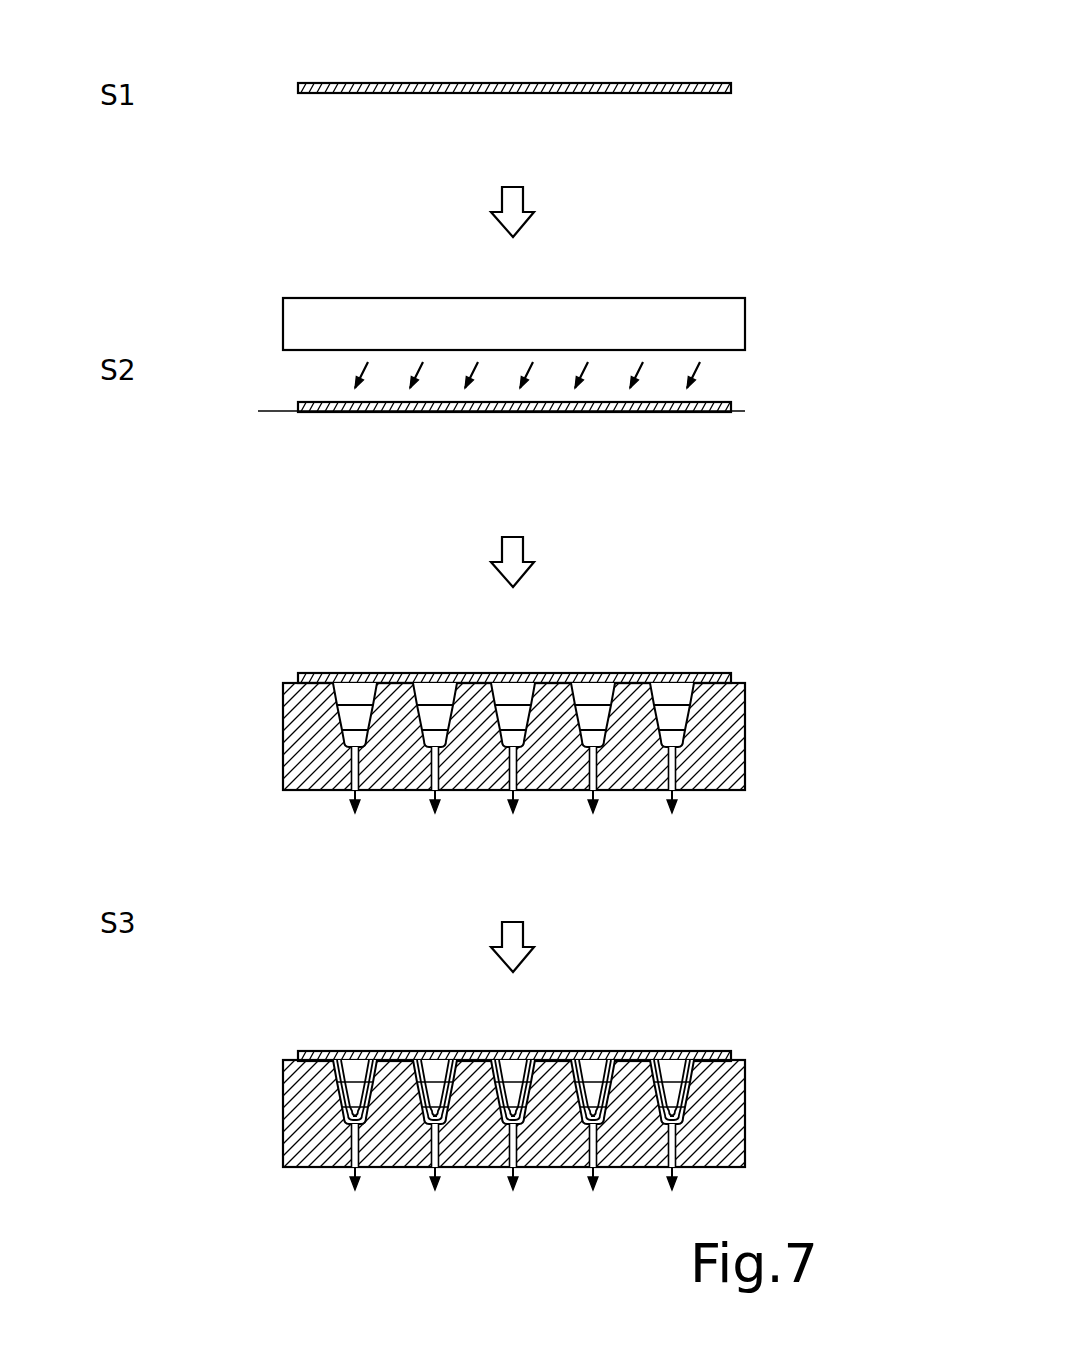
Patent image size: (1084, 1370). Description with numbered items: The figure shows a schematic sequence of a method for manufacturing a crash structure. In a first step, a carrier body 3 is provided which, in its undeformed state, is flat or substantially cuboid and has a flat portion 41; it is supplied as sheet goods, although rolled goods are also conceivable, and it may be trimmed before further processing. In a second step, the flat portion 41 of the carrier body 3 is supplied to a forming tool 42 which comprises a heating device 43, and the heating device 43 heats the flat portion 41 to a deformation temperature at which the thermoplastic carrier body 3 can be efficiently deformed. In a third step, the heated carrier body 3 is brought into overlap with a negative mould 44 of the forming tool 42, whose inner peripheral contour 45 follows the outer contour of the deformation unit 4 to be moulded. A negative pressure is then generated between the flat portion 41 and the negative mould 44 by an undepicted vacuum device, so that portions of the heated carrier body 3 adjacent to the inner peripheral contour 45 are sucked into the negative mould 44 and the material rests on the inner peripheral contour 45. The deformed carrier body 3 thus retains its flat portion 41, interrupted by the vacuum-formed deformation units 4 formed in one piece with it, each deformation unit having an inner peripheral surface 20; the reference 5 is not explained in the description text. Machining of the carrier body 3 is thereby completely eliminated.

The carrier body 3 is at (720, 81).
The flat portion 41 is at (414, 83).
The forming tool 42 is at (746, 255).
The heating device 43 is at (541, 339).
The negative mould 44 is at (732, 715).
The inner peripheral contour 45 is at (669, 720).
The mold surface 5 is at (320, 690).
The inner peripheral surface 20 is at (675, 1075).
The deformation unit 4 is at (664, 1118).